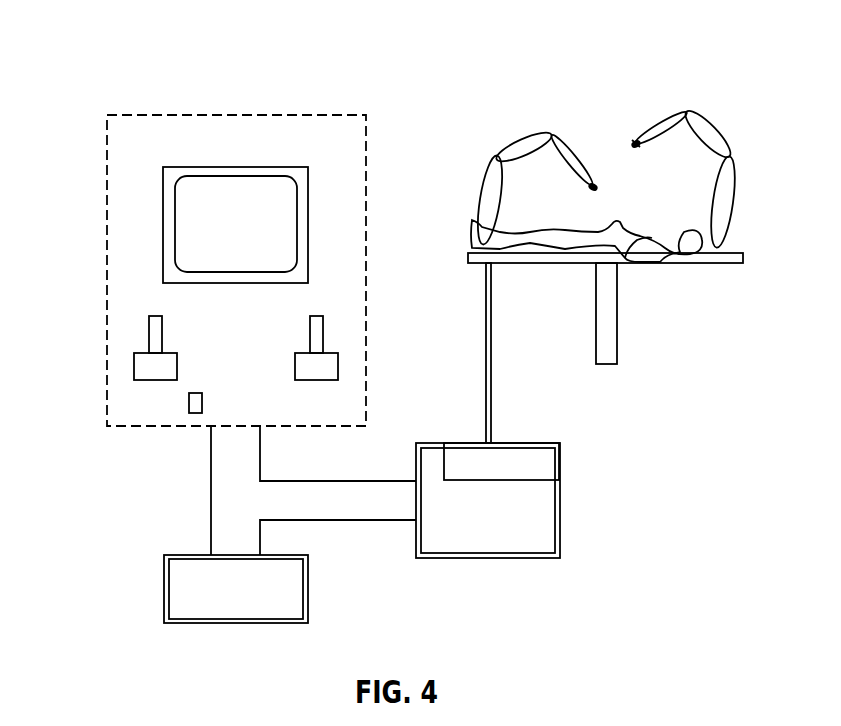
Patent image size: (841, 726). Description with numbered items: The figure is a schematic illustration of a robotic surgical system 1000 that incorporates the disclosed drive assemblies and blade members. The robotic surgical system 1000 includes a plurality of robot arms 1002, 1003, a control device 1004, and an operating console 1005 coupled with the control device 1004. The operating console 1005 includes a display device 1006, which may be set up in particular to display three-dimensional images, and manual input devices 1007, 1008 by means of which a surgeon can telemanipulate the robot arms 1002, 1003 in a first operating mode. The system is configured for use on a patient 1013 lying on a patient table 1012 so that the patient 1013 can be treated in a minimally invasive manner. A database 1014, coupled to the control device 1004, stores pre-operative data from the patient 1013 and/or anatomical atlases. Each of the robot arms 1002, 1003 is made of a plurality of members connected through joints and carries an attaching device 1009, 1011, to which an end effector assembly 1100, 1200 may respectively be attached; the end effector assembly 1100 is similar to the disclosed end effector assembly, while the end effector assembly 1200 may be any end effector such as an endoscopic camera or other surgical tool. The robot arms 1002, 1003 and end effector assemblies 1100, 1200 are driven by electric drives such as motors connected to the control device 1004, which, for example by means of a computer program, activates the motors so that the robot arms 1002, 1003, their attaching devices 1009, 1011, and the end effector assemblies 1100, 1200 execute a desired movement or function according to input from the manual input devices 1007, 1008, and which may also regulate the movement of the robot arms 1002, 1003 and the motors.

The robotic surgical system 1000 is at (616, 414).
The robot arm 1002 is at (505, 132).
The robot arm 1003 is at (716, 116).
The control device 1004 is at (518, 528).
The operating console 1005 is at (190, 82).
The display device 1006 is at (266, 238).
The manual input device 1007 is at (134, 366).
The manual input device 1008 is at (338, 365).
The attaching device 1009 is at (593, 184).
The attaching device 1011 is at (637, 141).
The patient table 1012 is at (552, 265).
The patient 1013 is at (653, 240).
The database 1014 is at (267, 603).
The end effector assembly 1100 is at (600, 178).
The end effector assembly 1200 is at (634, 141).